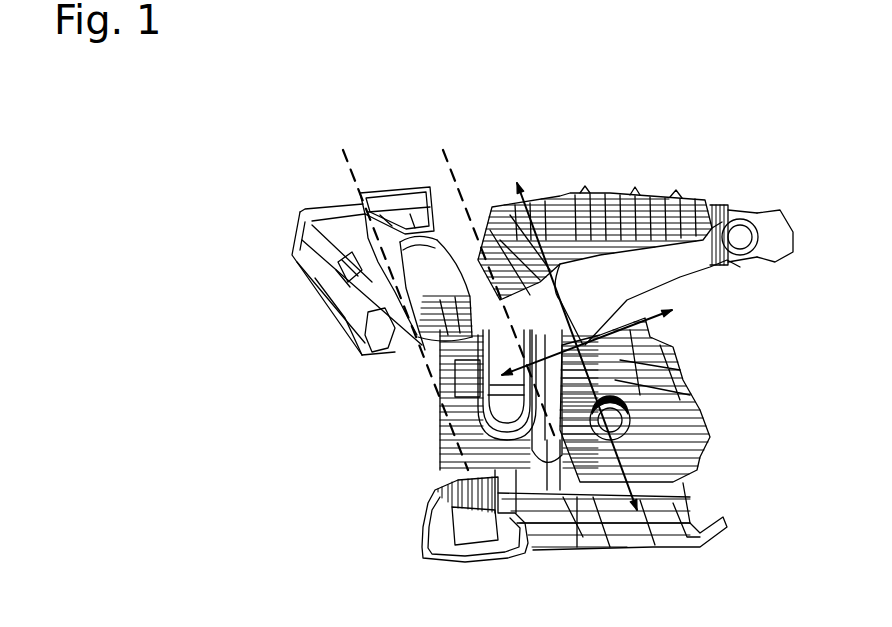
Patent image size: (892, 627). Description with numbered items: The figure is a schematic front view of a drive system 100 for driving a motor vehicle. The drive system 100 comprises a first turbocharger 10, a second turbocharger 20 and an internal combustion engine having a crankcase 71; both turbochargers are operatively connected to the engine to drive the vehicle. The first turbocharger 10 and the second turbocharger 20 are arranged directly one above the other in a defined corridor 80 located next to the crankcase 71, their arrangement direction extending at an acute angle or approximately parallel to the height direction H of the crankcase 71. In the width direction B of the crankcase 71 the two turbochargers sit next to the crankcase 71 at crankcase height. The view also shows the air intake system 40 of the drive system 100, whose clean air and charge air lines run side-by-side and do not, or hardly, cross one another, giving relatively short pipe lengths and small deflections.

The drive system 100 is at (227, 333).
The defined corridor 80 is at (398, 152).
The crankcase 71 is at (507, 205).
The second turbocharger 20 is at (432, 345).
The air intake system 40 is at (492, 337).
The first turbocharger 10 is at (475, 420).
The height direction H is at (527, 200).
The width direction B is at (660, 318).